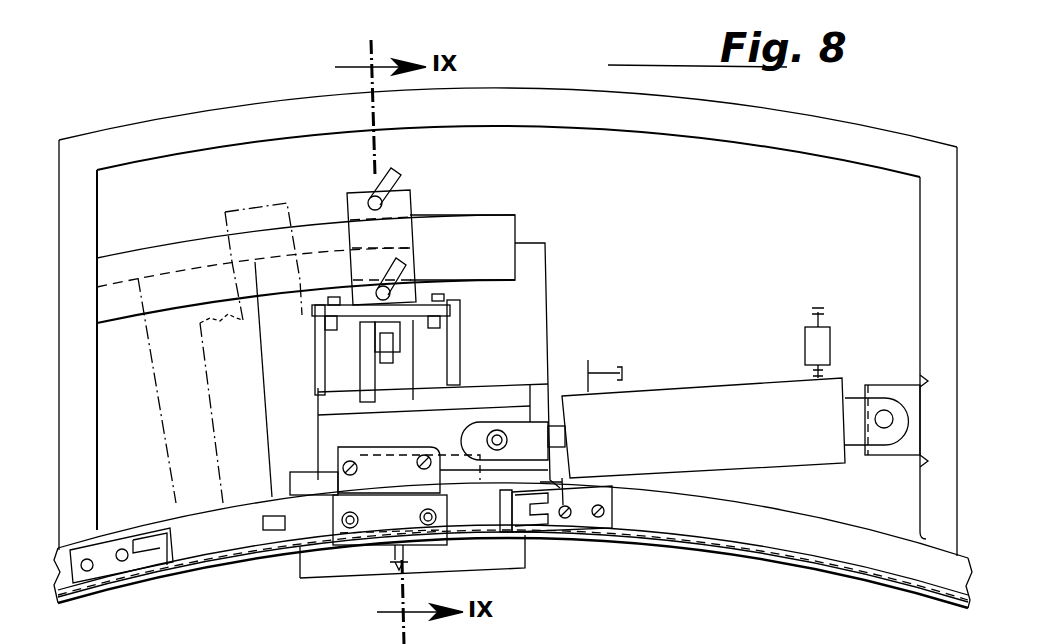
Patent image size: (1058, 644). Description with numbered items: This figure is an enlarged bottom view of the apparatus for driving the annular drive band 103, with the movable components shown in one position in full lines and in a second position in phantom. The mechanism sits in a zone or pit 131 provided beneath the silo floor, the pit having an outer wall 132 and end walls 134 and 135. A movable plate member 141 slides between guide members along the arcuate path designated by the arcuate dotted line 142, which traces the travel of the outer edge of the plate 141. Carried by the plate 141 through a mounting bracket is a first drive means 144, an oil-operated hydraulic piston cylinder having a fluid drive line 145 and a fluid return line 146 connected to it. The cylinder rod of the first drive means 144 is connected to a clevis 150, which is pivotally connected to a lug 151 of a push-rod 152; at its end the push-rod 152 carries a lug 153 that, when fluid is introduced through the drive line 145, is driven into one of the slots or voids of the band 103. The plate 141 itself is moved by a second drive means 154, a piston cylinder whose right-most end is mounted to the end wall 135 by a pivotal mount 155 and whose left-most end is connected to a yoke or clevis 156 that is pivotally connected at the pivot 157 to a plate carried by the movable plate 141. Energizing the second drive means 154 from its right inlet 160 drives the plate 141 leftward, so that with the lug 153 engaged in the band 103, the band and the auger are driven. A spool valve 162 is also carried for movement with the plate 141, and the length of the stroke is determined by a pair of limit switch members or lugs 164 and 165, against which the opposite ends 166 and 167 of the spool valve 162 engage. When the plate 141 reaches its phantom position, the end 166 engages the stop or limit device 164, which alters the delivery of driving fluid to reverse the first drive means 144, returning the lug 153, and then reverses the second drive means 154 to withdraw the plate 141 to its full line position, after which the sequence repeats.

The annular drive band 103 is at (672, 535).
The pit 131 is at (797, 170).
The outer wall 132 is at (520, 130).
The end wall 134 is at (99, 205).
The end wall 135 is at (920, 213).
The movable plate member 141 is at (533, 270).
The arcuate dotted line 142 is at (128, 278).
The first drive means 144 is at (398, 230).
The fluid drive line 145 is at (400, 178).
The fluid return line 146 is at (400, 272).
The clevis 150 is at (397, 327).
The lug 151 is at (340, 354).
The push-rod 152 is at (403, 363).
The lug 153 is at (320, 587).
The second drive means 154 is at (783, 450).
The pivotal mount 155 is at (882, 412).
The yoke or clevis 156 is at (548, 438).
The pivotal connection 157 is at (500, 438).
The right inlet 160 is at (812, 378).
The spool valve 162 is at (402, 522).
The limit switch member 164 is at (177, 567).
The limit switch member 165 is at (517, 507).
The end of spool valve 166 is at (275, 530).
The end of spool valve 167 is at (503, 530).